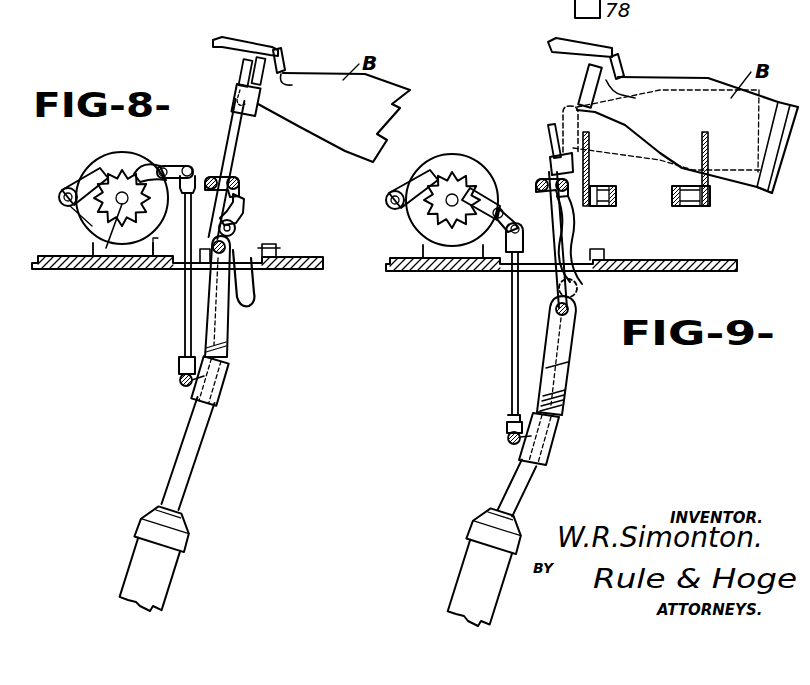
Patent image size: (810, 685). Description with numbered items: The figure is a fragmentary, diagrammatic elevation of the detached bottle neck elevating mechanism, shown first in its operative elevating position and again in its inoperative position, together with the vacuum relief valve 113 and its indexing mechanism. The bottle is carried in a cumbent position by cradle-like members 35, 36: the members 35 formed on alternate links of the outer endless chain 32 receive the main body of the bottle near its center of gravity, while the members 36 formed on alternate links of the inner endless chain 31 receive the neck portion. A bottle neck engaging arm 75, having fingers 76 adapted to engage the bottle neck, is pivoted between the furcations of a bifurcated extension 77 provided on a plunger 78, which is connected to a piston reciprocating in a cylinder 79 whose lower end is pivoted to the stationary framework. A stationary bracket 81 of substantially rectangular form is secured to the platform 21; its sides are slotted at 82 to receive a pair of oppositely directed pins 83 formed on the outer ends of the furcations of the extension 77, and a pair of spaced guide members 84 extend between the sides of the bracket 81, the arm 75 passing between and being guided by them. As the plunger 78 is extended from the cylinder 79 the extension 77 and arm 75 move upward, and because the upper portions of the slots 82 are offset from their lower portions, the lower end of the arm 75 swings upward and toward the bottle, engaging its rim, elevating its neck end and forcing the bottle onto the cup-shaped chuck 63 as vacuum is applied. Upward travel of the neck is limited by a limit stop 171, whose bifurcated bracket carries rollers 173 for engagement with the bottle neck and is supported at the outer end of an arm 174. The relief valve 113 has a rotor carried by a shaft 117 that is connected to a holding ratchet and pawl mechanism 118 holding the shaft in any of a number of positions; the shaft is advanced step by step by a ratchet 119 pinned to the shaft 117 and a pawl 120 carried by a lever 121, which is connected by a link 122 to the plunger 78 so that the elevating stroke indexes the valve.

In FIG. 8, the platform 21 is at (298, 259).
In FIG. 9, the platform 21 is at (682, 262).
In FIG. 9, the inner endless chain 31 is at (617, 203).
In FIG. 9, the outer endless chain 32 is at (690, 206).
In FIG. 9, the cradle-like members 35 is at (709, 153).
In FIG. 9, the cradle-like members 36 is at (590, 166).
In FIG. 9, the cup-shaped chuck 63 is at (758, 197).
In FIG. 8, the bottle neck engaging arm 75 is at (233, 144).
In FIG. 9, the bottle neck engaging arm 75 is at (549, 283).
In FIG. 8, the fingers 76 is at (257, 113).
In FIG. 9, the fingers 76 is at (563, 161).
In FIG. 8, the bifurcated extension 77 is at (229, 330).
In FIG. 9, the bifurcated extension 77 is at (567, 353).
In FIG. 8, the plunger 78 is at (200, 434).
In FIG. 9, the plunger 78 is at (537, 477).
In FIG. 8, the cylinder 79 is at (166, 595).
In FIG. 9, the cylinder 79 is at (466, 589).
In FIG. 8, the stationary bracket 81 is at (256, 291).
In FIG. 9, the stationary bracket 81 is at (590, 253).
In FIG. 8, the slots 82 is at (245, 204).
In FIG. 9, the slots 82 is at (570, 222).
In FIG. 8, the pins 83 is at (238, 230).
In FIG. 9, the pins 83 is at (580, 290).
In FIG. 8, the guide members 84 is at (240, 182).
In FIG. 9, the guide members 84 is at (536, 185).
In FIG. 8, the relief valve 113 is at (112, 152).
In FIG. 9, the relief valve 113 is at (486, 156).
In FIG. 8, the shaft 117 is at (120, 199).
In FIG. 9, the shaft 117 is at (450, 201).
In FIG. 8, the holding ratchet and pawl mechanism 118 is at (60, 213).
In FIG. 8, the ratchet 119 is at (106, 249).
In FIG. 8, the pawl 120 is at (160, 163).
In FIG. 8, the lever 121 is at (174, 246).
In FIG. 8, the link 122 is at (186, 305).
In FIG. 9, the link 122 is at (512, 396).
In FIG. 8, the limit stop 171 is at (285, 52).
In FIG. 9, the limit stop 171 is at (625, 60).
In FIG. 8, the rollers 173 is at (307, 86).
In FIG. 9, the rollers 173 is at (640, 100).
In FIG. 8, the arm 174 is at (251, 43).
In FIG. 9, the arm 174 is at (561, 42).